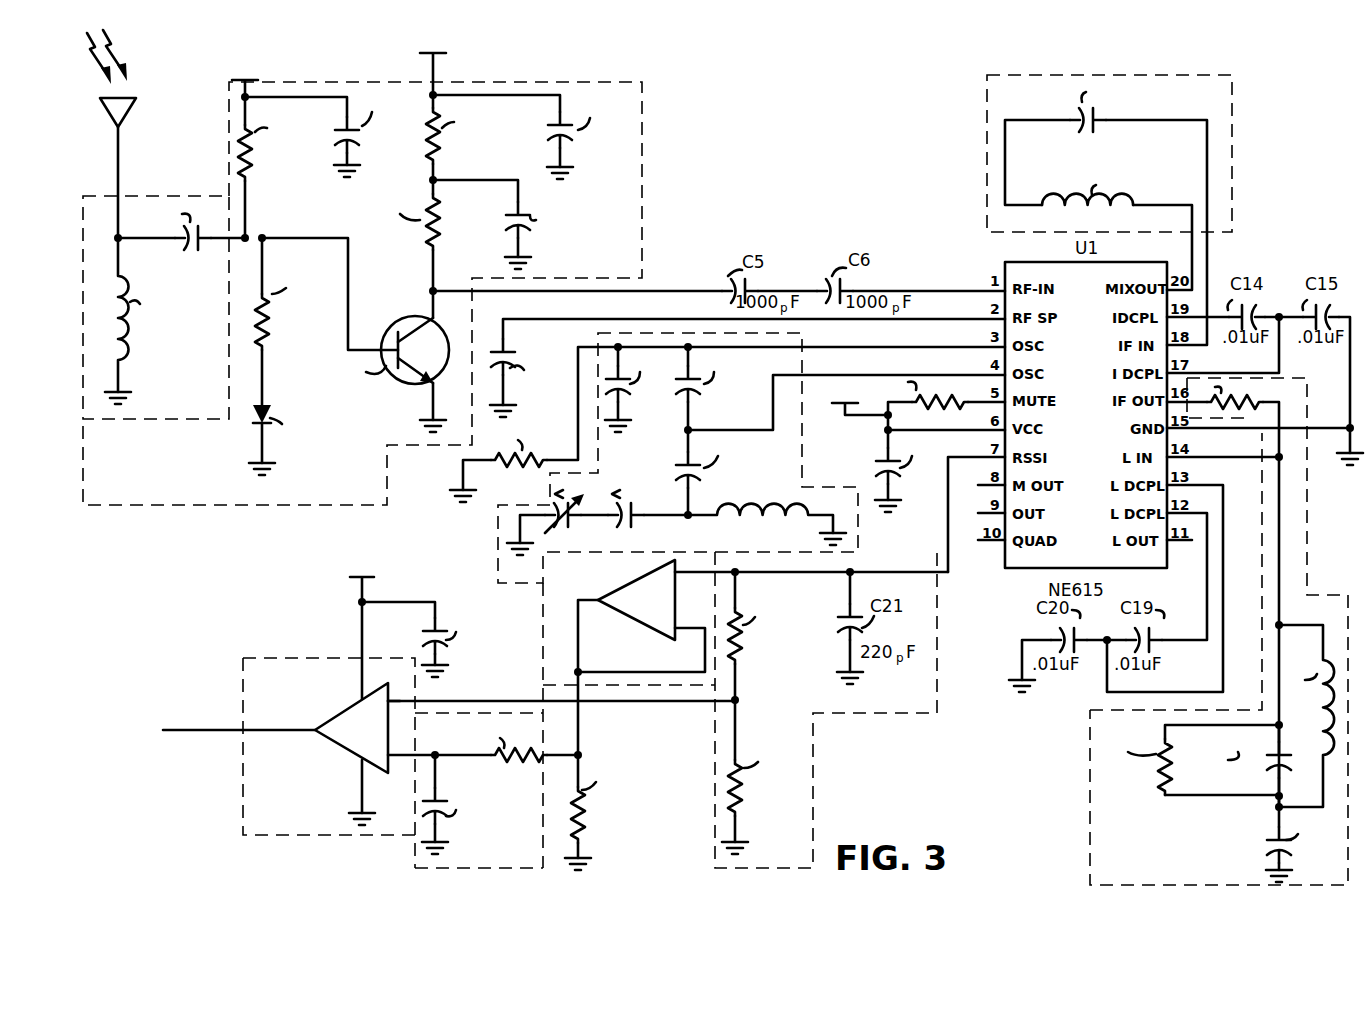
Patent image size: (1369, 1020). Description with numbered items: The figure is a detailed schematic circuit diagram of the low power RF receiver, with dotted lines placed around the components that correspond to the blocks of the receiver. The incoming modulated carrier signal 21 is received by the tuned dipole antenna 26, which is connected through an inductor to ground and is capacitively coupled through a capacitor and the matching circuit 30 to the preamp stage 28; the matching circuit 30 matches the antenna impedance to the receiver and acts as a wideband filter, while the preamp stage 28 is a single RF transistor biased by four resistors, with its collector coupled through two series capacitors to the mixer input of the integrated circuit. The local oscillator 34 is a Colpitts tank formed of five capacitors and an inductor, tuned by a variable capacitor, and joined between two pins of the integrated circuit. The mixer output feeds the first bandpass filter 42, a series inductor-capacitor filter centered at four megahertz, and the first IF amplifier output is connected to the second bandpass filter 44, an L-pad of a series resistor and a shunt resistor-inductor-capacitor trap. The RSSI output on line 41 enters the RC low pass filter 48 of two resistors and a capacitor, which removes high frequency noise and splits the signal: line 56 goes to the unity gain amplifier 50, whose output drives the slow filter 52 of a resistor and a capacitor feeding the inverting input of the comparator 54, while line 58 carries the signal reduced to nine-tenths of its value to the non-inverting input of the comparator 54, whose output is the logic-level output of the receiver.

The modulated carrier signal 21 is at (118, 45).
The tuned dipole antenna 26 is at (110, 114).
The preamp stage 28 is at (642, 118).
The matching circuit 30 is at (103, 194).
The local oscillator 34 is at (496, 544).
The line 41 is at (944, 512).
The first bandpass filter 42 is at (1232, 138).
The second bandpass filter 44 is at (1307, 567).
The RC low pass filter 48 is at (850, 740).
The unity gain amplifier 50 is at (606, 711).
The slow filter 52 is at (415, 855).
The comparator 54 is at (290, 650).
The line 56 is at (695, 597).
The line 58 is at (470, 701).